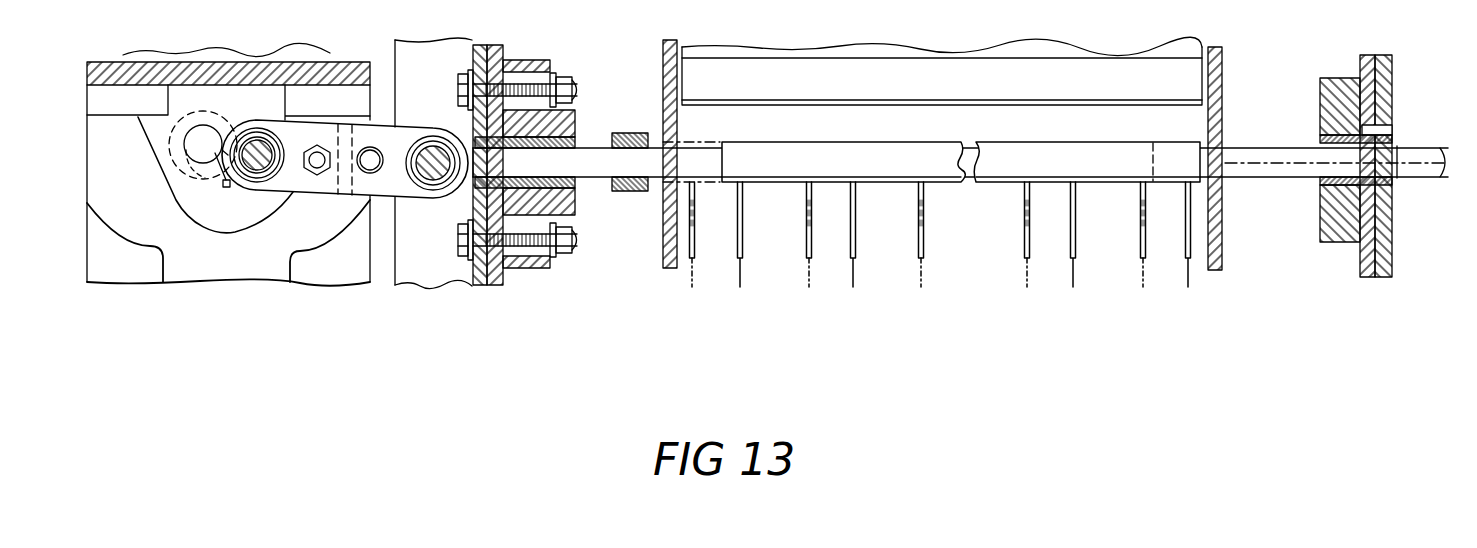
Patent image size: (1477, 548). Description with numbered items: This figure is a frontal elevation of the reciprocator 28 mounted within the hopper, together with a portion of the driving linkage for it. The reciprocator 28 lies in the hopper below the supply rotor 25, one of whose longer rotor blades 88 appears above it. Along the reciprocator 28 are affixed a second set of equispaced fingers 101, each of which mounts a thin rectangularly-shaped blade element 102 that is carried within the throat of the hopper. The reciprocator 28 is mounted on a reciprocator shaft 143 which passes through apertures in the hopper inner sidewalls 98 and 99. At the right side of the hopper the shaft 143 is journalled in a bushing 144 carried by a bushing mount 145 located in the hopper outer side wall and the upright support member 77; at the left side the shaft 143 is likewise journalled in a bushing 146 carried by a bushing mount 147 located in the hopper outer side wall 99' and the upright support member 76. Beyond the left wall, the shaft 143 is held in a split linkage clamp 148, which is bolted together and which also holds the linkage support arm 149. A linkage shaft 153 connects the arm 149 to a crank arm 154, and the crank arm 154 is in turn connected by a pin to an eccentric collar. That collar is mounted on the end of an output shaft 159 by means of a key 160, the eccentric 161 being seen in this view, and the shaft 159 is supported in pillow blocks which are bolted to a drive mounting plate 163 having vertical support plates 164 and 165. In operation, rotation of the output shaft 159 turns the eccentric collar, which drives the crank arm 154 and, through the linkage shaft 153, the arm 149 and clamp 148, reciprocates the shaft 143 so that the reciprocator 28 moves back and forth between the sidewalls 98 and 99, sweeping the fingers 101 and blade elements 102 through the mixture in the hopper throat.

The supply rotor 25 is at (803, 50).
The reciprocator 28 is at (928, 143).
The upright channel member 76 is at (481, 285).
The upright channel member 77 is at (1382, 277).
The rotor blade 88 is at (851, 88).
The inner sidewall 98 is at (1216, 82).
The inner sidewall 99 is at (648, 154).
The hopper outer side wall 99' is at (519, 185).
The finger 101 is at (850, 250).
The rectangularly-shaped blade element 102 is at (738, 274).
The reciprocator shaft 143 is at (1245, 160).
The bushing 144 is at (1392, 184).
The bushing mount 145 is at (1330, 224).
The bushing 146 is at (578, 178).
The bushing mount 147 is at (562, 205).
The split linkage clamp 148 is at (636, 133).
The linkage support arm 149 is at (471, 125).
The linkage shaft 153 is at (456, 180).
The crank arm 154 is at (360, 196).
The output shaft 159 is at (221, 150).
The key 160 is at (226, 186).
The pillow block 161 is at (177, 192).
The drive mounting plate 163 is at (183, 65).
The vertical support plate 164 is at (158, 240).
The vertical support plate 165 is at (343, 270).